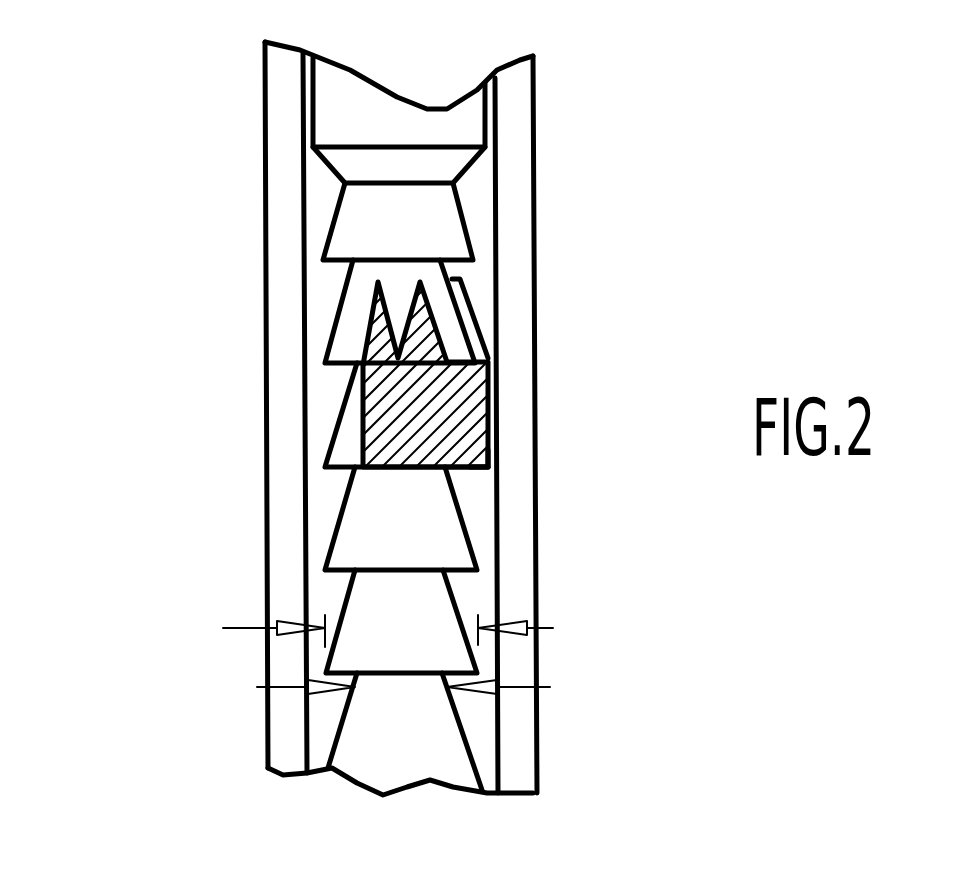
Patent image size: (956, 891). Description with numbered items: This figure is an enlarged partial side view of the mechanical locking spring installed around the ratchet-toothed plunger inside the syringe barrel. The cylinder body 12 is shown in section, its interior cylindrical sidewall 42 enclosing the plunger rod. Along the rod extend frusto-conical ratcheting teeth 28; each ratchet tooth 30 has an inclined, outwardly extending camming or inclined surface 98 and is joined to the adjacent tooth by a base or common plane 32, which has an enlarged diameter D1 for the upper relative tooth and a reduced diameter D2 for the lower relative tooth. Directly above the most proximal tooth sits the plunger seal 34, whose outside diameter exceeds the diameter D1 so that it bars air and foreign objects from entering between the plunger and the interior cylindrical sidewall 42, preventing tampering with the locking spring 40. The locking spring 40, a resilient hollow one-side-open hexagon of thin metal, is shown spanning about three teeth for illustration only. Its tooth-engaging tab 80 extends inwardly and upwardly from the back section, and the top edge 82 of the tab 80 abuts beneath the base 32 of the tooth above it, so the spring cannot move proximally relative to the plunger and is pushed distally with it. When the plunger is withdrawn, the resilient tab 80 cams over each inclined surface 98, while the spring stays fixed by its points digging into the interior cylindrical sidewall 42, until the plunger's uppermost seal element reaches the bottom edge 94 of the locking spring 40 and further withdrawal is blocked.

The cylinder body 12 is at (282, 577).
The interior cylindrical sidewall 42 is at (302, 190).
The plunger seal 34 is at (350, 117).
The ratchet tooth 30 is at (470, 217).
The top edge 82 is at (458, 268).
The tooth-engaging tab 80 is at (468, 325).
The locking spring 40 is at (490, 395).
The bottom edge 94 is at (480, 475).
The inclined surface 98 is at (337, 530).
The base 32 is at (465, 577).
The ratcheting teeth 28 is at (340, 608).
The enlarged diameter D1 is at (422, 630).
The reduced diameter D2 is at (439, 687).